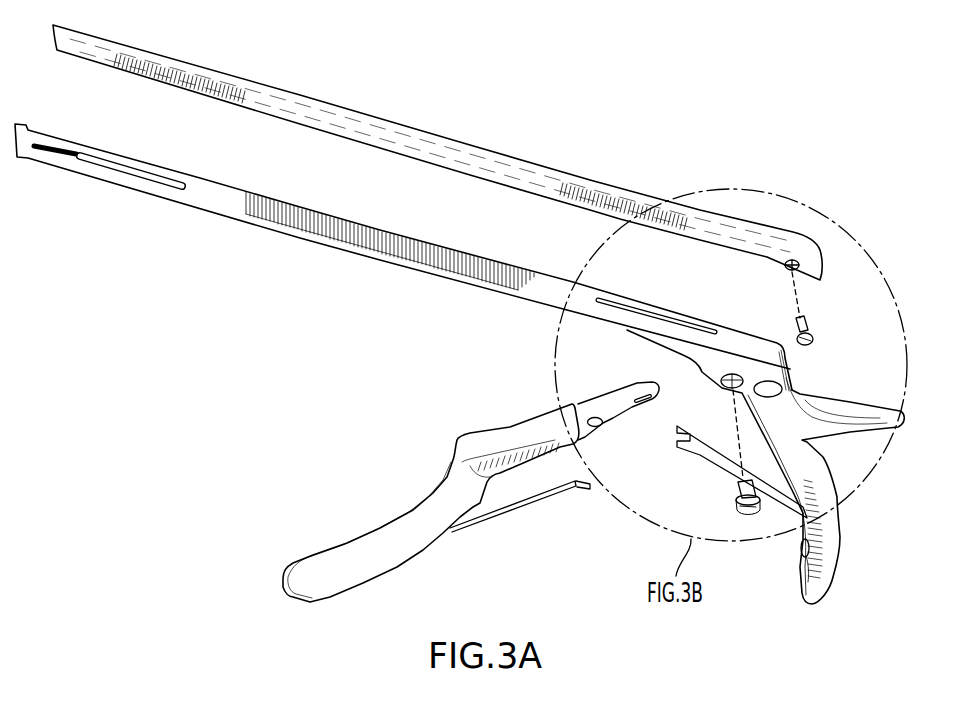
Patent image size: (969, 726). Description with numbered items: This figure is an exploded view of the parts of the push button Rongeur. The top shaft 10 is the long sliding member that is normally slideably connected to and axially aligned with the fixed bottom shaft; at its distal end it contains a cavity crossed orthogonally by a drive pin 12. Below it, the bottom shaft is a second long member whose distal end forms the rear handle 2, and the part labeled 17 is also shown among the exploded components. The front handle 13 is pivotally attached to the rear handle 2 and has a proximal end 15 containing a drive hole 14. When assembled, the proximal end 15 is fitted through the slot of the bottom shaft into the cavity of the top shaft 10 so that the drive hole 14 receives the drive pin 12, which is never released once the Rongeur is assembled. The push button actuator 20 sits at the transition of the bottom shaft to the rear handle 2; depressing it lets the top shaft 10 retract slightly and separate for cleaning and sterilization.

The rear handle 2 is at (823, 498).
The top shaft 10 is at (747, 223).
The drive pin 12 is at (811, 324).
The front handle 13 is at (470, 447).
The drive hole 14 is at (648, 395).
The proximal end 15 is at (680, 386).
The lower shaft 17 is at (100, 162).
The push button actuator 20 is at (772, 391).